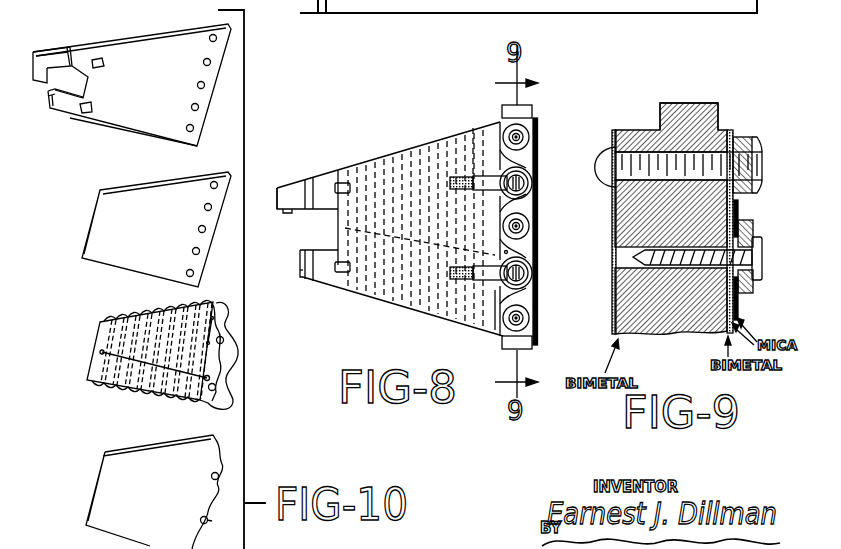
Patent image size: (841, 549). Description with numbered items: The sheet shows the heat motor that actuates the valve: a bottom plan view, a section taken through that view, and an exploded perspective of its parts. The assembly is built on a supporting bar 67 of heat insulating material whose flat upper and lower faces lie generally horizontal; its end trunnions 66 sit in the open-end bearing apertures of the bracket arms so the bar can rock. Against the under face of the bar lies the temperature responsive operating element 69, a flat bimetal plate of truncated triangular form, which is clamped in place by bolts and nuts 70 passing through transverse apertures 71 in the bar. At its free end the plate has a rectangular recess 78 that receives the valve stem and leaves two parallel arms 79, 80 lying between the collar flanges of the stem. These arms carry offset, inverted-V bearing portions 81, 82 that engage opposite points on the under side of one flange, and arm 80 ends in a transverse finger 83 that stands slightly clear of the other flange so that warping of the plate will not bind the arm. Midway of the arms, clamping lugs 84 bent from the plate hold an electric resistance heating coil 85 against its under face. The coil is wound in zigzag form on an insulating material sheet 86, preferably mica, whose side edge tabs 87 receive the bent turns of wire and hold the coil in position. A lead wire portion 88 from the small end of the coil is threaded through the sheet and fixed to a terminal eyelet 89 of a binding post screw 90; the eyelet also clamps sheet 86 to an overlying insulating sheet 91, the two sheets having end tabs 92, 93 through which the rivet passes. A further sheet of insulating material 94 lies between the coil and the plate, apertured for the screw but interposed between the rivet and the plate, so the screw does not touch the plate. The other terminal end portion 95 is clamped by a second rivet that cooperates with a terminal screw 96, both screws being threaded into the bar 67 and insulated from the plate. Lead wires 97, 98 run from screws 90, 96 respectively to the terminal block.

In FIG. 8, the end trunnions 66 is at (528, 112).
In FIG. 9, the end trunnions 66 is at (702, 104).
In FIG. 8, the supporting bar 67 is at (539, 158).
In FIG. 9, the supporting bar 67 is at (622, 230).
In FIG. 10, the temperature responsive operating element 69 is at (175, 95).
In FIG. 9, the temperature responsive operating element 69 is at (740, 212).
In FIG. 8, the bolts and nuts 70 is at (530, 135).
In FIG. 9, the bolts and nuts 70 is at (748, 142).
In FIG. 9, the transverse apertures 71 is at (650, 162).
In FIG. 10, the rectangular recess 78 is at (80, 85).
In FIG. 8, the rectangular recess 78 is at (322, 200).
In FIG. 10, the arm 79 is at (70, 118).
In FIG. 8, the arm 79 is at (324, 270).
In FIG. 10, the arm 80 is at (55, 48).
In FIG. 8, the arm 80 is at (338, 182).
In FIG. 10, the bearing portion 81 is at (50, 110).
In FIG. 8, the bearing portion 81 is at (303, 278).
In FIG. 10, the bearing portion 82 is at (70, 47).
In FIG. 8, the bearing portion 82 is at (296, 188).
In FIG. 10, the finger 83 is at (40, 84).
In FIG. 8, the finger 83 is at (287, 215).
In FIG. 10, the clamping lugs 84 is at (103, 62).
In FIG. 8, the clamping lugs 84 is at (345, 183).
In FIG. 10, the electric resistance heating coil 85 is at (110, 337).
In FIG. 8, the electric resistance heating coil 85 is at (452, 140).
In FIG. 10, the insulating material sheet 86 is at (98, 363).
In FIG. 10, the side edge tabs 87 is at (140, 318).
In FIG. 10, the lead wire portion 88 is at (212, 402).
In FIG. 9, the terminal eyelet 89 is at (762, 256).
In FIG. 8, the binding post screw 90 is at (532, 183).
In FIG. 9, the binding post screw 90 is at (753, 238).
In FIG. 10, the insulating sheet 91 is at (105, 494).
In FIG. 10, the end tabs 92 is at (216, 388).
In FIG. 10, the end tabs 93 is at (208, 522).
In FIG. 8, the end tabs 93 is at (508, 253).
In FIG. 10, the sheet of insulating material 94 is at (147, 190).
In FIG. 9, the sheet of insulating material 94 is at (731, 133).
In FIG. 10, the terminal end portion 95 is at (222, 337).
In FIG. 8, the terminal screw 96 is at (532, 273).
In FIG. 8, the lead wire 97 is at (470, 172).
In FIG. 8, the lead wire 98 is at (460, 325).